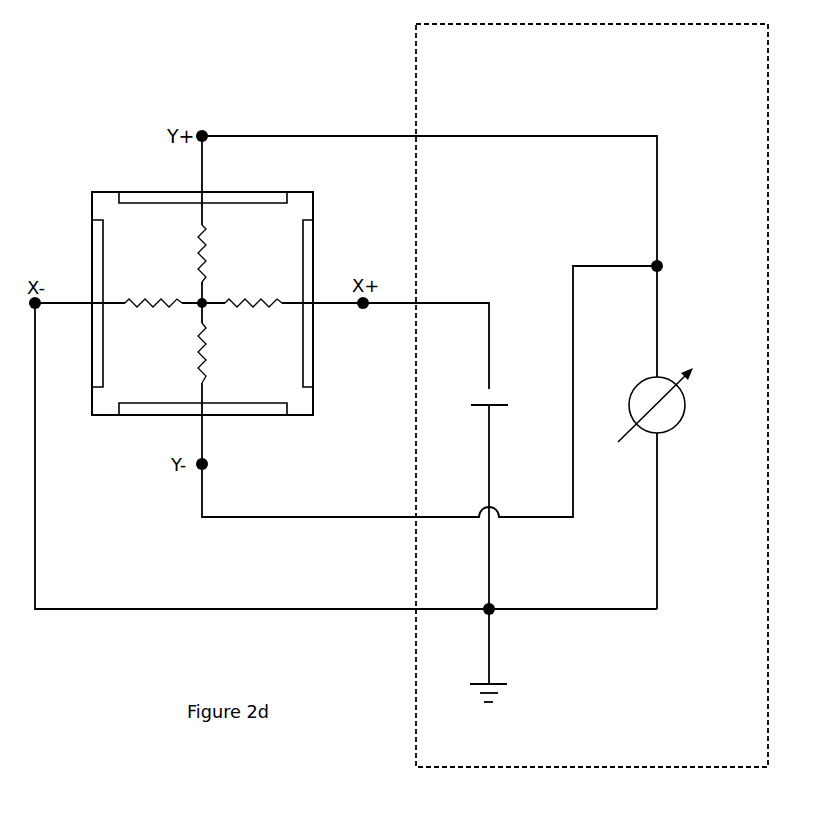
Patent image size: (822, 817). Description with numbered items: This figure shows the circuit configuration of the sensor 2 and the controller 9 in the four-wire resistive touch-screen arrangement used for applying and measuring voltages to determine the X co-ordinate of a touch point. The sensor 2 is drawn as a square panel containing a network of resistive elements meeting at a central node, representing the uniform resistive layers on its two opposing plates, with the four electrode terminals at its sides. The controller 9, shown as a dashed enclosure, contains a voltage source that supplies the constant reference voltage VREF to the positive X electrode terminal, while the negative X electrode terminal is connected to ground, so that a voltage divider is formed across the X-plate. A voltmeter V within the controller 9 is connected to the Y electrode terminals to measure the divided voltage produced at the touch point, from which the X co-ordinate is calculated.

The sensor 2 is at (92, 210).
The controller 9 is at (416, 62).
The constant reference voltage VREF is at (503, 377).
The voltmeter V is at (655, 405).